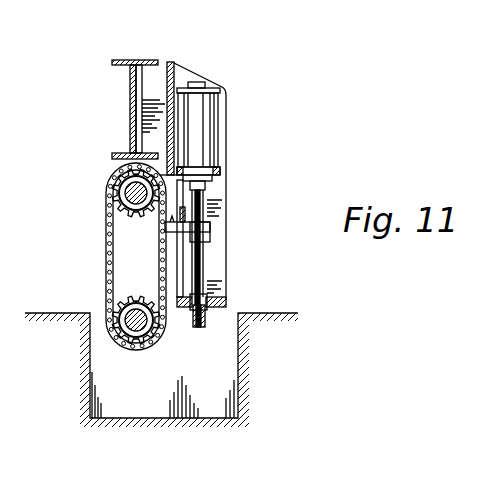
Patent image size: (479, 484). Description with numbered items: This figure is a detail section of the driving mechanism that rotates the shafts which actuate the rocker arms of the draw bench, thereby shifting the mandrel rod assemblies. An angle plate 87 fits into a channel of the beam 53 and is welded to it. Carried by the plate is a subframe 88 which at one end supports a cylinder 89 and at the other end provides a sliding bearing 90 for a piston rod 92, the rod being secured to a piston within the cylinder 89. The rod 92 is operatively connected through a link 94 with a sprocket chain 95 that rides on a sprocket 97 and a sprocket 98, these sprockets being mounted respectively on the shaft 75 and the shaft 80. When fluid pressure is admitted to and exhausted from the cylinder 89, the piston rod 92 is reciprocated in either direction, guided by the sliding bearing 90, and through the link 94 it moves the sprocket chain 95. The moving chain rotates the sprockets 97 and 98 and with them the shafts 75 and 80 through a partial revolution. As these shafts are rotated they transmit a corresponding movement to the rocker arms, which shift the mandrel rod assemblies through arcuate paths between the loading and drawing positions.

The beam 53 is at (130, 94).
The angle plate 87 is at (177, 67).
The cylinder 89 is at (203, 127).
The link 94 is at (208, 230).
The piston rod 92 is at (193, 267).
The subframe 88 is at (213, 287).
The sliding bearing 90 is at (207, 308).
The sprocket chain 95 is at (105, 240).
The sprocket 97 is at (125, 192).
The shaft 75 is at (135, 210).
The shaft 80 is at (138, 300).
The sprocket 98 is at (122, 307).